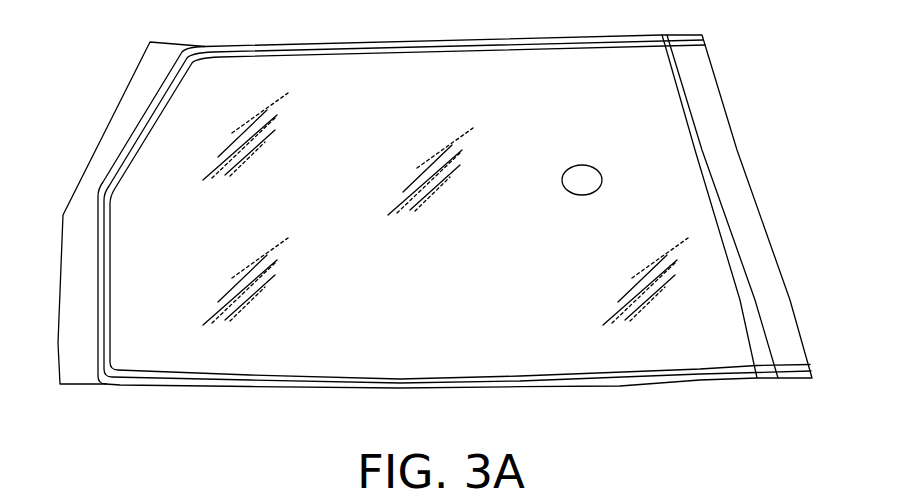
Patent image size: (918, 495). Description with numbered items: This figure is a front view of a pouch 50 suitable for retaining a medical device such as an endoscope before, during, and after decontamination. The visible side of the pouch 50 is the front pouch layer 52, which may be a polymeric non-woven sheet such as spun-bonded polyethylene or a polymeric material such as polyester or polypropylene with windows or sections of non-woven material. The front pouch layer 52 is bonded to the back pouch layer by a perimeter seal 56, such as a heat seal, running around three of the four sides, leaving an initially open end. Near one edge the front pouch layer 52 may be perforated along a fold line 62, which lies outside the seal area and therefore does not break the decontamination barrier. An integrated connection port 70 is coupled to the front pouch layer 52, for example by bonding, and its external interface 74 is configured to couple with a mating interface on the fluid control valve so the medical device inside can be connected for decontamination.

The pouch 50 is at (713, 86).
The front pouch layer 52 is at (411, 302).
The perimeter seal 56 is at (100, 352).
The fold line 62 is at (770, 355).
The connection port 70 is at (592, 142).
The external interface 74 is at (562, 177).